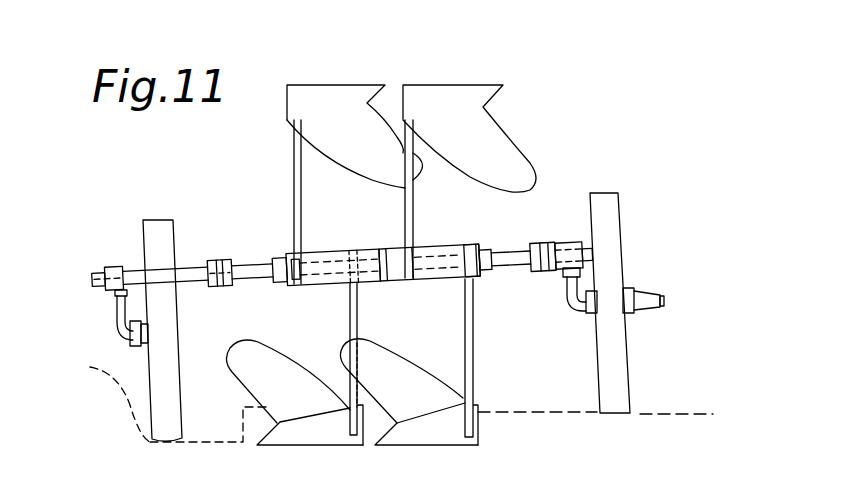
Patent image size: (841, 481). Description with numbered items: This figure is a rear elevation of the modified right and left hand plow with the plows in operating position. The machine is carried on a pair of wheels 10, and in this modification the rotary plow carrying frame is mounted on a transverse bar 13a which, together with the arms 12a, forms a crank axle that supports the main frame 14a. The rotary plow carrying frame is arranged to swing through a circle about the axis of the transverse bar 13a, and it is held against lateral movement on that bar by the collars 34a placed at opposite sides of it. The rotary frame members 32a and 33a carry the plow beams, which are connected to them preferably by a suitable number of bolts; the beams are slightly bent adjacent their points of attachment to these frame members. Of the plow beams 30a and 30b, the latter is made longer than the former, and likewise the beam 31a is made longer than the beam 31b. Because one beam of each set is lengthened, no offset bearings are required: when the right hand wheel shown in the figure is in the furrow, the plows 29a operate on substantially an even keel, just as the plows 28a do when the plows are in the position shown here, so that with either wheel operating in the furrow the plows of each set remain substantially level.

The wheel 10 is at (172, 408).
The arm 12a is at (110, 307).
The transverse bar 13a is at (183, 268).
The main frame 14a is at (213, 262).
The plow 28a is at (280, 356).
The plow 29a is at (310, 105).
The plow beam 30a is at (358, 313).
The plow beam 30b is at (473, 363).
The beam 31a is at (302, 193).
The beam 31b is at (417, 203).
The rotary frame member 32a is at (455, 240).
The rotary frame member 33a is at (337, 258).
The collar 34a is at (492, 287).